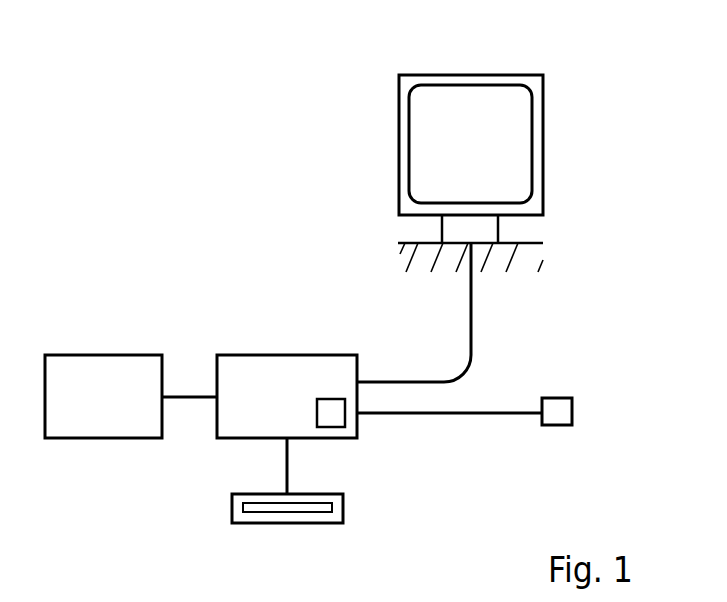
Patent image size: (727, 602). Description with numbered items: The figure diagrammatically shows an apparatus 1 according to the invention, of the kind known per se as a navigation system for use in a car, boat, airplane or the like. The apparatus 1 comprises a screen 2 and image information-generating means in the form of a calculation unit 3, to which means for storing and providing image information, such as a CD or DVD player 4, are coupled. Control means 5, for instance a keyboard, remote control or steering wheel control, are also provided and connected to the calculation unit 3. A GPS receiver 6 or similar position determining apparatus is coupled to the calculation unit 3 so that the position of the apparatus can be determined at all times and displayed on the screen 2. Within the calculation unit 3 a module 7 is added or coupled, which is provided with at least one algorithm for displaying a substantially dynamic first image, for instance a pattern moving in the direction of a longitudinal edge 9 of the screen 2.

The apparatus 1 is at (288, 140).
The screen 2 is at (512, 114).
The calculation unit 3 is at (240, 365).
The CD or DVD player 4 is at (343, 508).
The control means 5 is at (73, 365).
The GPS receiver 6 is at (572, 413).
The module 7 is at (362, 439).
The longitudinal edge 9 is at (491, 85).